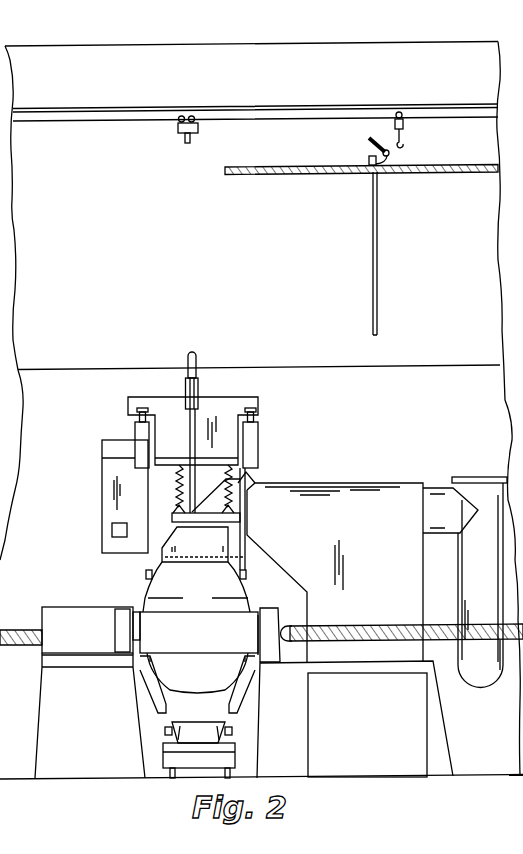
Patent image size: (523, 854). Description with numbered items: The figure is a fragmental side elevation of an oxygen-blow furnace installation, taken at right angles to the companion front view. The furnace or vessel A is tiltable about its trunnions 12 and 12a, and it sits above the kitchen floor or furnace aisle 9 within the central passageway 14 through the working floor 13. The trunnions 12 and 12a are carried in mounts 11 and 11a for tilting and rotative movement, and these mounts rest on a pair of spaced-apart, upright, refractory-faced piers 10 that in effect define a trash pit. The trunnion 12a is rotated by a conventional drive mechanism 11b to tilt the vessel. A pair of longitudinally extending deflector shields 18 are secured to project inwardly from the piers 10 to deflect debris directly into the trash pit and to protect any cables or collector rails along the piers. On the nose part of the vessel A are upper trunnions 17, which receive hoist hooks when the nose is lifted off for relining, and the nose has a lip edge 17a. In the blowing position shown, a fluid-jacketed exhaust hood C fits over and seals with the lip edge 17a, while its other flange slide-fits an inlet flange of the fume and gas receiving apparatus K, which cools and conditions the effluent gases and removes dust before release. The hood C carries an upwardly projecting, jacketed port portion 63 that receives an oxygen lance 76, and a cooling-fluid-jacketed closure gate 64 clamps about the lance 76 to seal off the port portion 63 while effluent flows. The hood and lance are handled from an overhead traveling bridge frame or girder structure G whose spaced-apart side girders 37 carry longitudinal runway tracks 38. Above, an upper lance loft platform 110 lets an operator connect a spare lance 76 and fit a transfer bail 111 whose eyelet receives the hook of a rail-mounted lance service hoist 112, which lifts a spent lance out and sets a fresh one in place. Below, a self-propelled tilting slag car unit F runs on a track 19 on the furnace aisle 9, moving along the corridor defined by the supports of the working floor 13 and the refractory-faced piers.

The kitchen floor or furnace aisle 9 is at (385, 773).
The refractory-faced piers 10 is at (41, 686).
The mount 11 is at (272, 614).
The mount 11a is at (115, 614).
The drive mechanism 11b is at (58, 607).
The trunnion 12 is at (258, 667).
The trunnion 12a is at (137, 612).
The working floor 13 is at (387, 624).
The central passageway 14 is at (290, 627).
The upper trunnions 17 is at (147, 575).
The lip edge 17a is at (255, 519).
The deflector shields 18 is at (222, 711).
The track 19 is at (156, 779).
The girders 37 is at (260, 441).
The runway tracks 38 is at (260, 417).
The port portion 63 is at (178, 510).
The closure gate 64 is at (197, 505).
The oxygen lance 76 is at (380, 233).
The lance loft platform 110 is at (248, 176).
The transfer bail 111 is at (396, 161).
The lance service hoist 112 is at (176, 131).
The furnace or vessel A is at (196, 627).
The exhaust hood C is at (202, 544).
The tilting slag car unit F is at (206, 750).
The overhead traveling bridge frame structure G is at (133, 427).
The fume and gas receiving apparatus K is at (387, 483).